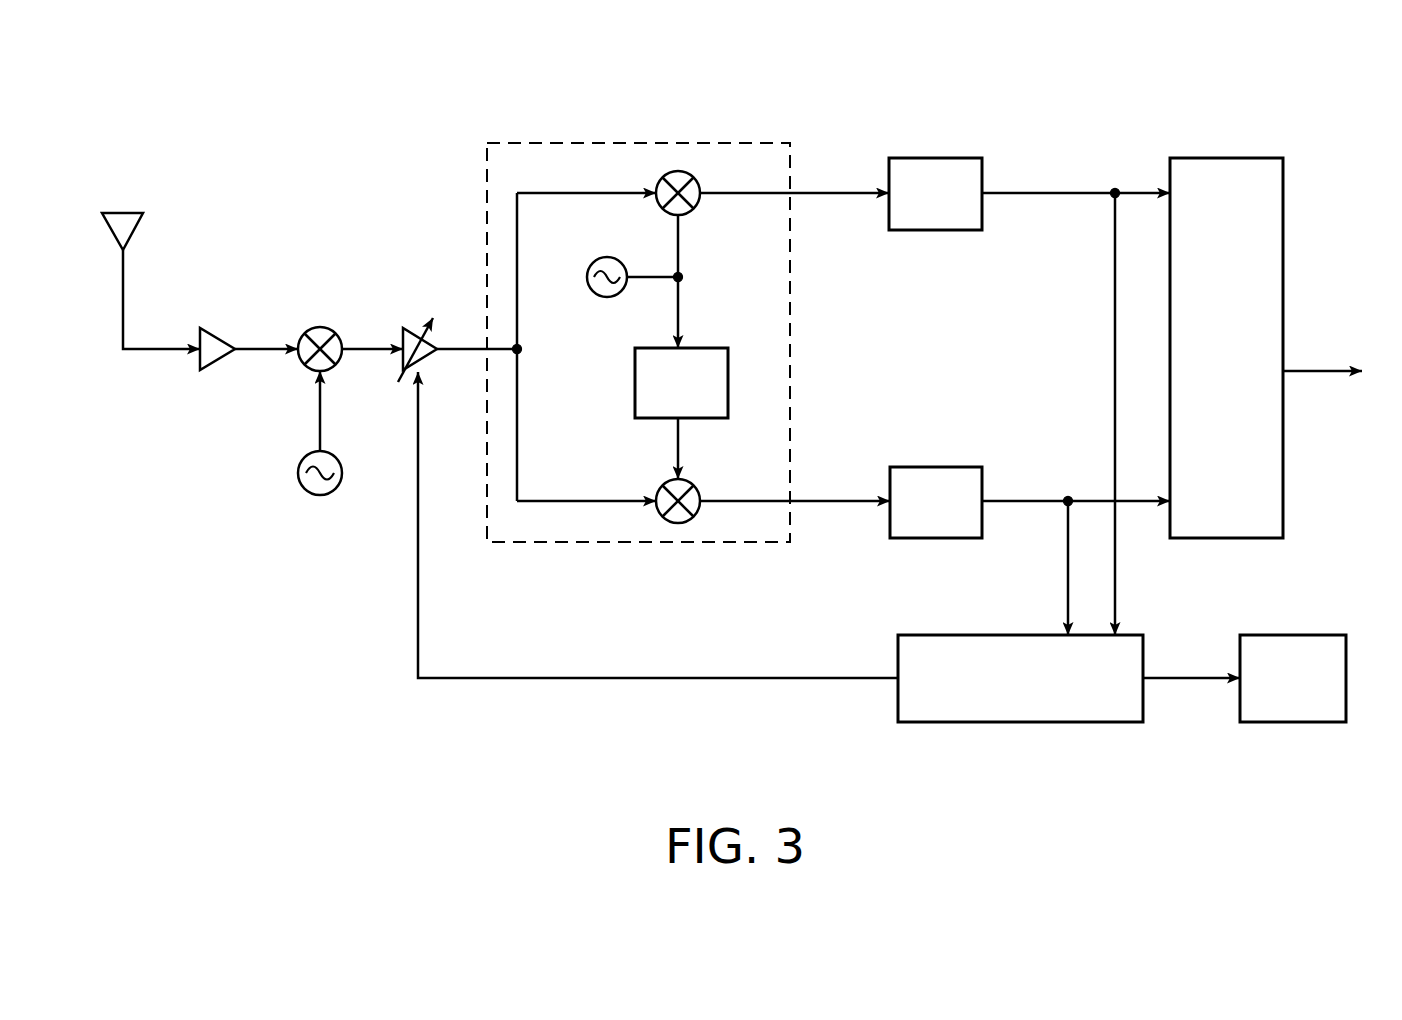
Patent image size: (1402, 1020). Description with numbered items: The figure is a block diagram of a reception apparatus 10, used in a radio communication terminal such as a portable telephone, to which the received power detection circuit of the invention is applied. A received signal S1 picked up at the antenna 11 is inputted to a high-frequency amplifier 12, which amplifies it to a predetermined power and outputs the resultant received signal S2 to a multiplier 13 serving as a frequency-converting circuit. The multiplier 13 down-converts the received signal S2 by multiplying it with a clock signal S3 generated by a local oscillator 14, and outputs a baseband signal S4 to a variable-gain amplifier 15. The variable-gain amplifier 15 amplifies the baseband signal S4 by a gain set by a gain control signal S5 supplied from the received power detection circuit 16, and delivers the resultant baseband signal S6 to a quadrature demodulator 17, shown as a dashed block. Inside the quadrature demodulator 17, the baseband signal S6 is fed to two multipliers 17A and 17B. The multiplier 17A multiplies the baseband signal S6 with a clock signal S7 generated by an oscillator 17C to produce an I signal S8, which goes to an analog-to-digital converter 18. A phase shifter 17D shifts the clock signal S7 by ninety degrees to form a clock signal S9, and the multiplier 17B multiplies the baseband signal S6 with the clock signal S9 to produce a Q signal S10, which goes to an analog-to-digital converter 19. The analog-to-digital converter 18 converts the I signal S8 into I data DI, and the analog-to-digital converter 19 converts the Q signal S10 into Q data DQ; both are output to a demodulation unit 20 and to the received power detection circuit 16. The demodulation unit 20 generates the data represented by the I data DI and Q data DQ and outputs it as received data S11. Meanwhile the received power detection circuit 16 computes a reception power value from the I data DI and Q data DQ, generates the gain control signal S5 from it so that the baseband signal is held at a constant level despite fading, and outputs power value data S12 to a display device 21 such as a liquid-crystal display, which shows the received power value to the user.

The reception apparatus 10 is at (1385, 128).
The antenna 11 is at (123, 212).
The high-frequency amplifier 12 is at (218, 328).
The multiplier 13 is at (314, 327).
The local oscillator 14 is at (320, 495).
The variable-gain amplifier 15 is at (415, 327).
The received power detection circuit 16 is at (1068, 722).
The quadrature demodulator 17 is at (630, 545).
The multiplier 17A is at (660, 206).
The multiplier 17B is at (660, 490).
The oscillator 17C is at (590, 288).
The phase shifter 17D is at (635, 383).
The analog-to-digital converter 18 is at (942, 158).
The analog-to-digital converter 19 is at (942, 467).
The demodulation unit 20 is at (1283, 258).
The display device 21 is at (1292, 635).
The received signal S1 is at (160, 349).
The received signal S2 is at (271, 349).
The clock signal S3 is at (320, 423).
The baseband signal S4 is at (357, 349).
The gain control signal S5 is at (418, 617).
The baseband signal S6 is at (461, 349).
The clock signal S7 is at (678, 240).
The I signal S8 is at (833, 193).
The clock signal S9 is at (680, 455).
The Q signal S10 is at (838, 501).
The received data S11 is at (1320, 371).
The power value data S12 is at (1195, 678).
The I data DI is at (1040, 193).
The Q data DQ is at (1030, 501).